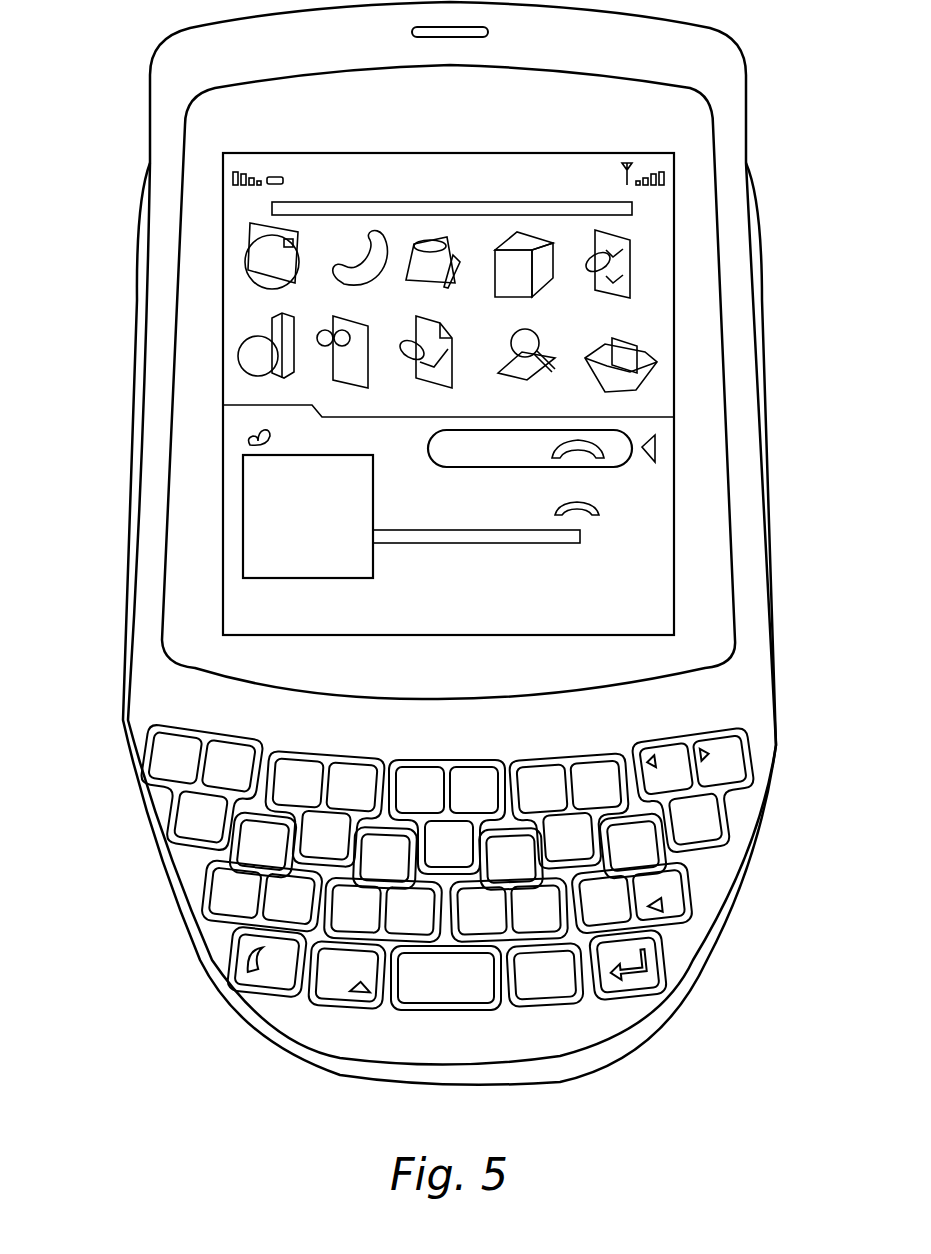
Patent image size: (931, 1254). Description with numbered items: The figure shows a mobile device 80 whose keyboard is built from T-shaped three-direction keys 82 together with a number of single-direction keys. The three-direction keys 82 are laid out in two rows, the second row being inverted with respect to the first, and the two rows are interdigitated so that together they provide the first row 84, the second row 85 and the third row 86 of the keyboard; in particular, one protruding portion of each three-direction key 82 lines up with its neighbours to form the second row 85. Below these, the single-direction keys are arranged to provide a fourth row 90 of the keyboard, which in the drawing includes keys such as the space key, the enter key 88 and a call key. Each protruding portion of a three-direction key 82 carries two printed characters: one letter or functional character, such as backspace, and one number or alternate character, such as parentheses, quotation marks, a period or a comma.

The mobile device 80 is at (118, 124).
The three-direction keys 82 is at (716, 808).
The first row of the keyboard 84 is at (130, 746).
The second row of the keyboard 85 is at (160, 818).
The third row of the keyboard 86 is at (188, 886).
The enter key 88 is at (630, 993).
The fourth row of the keyboard 90 is at (220, 952).